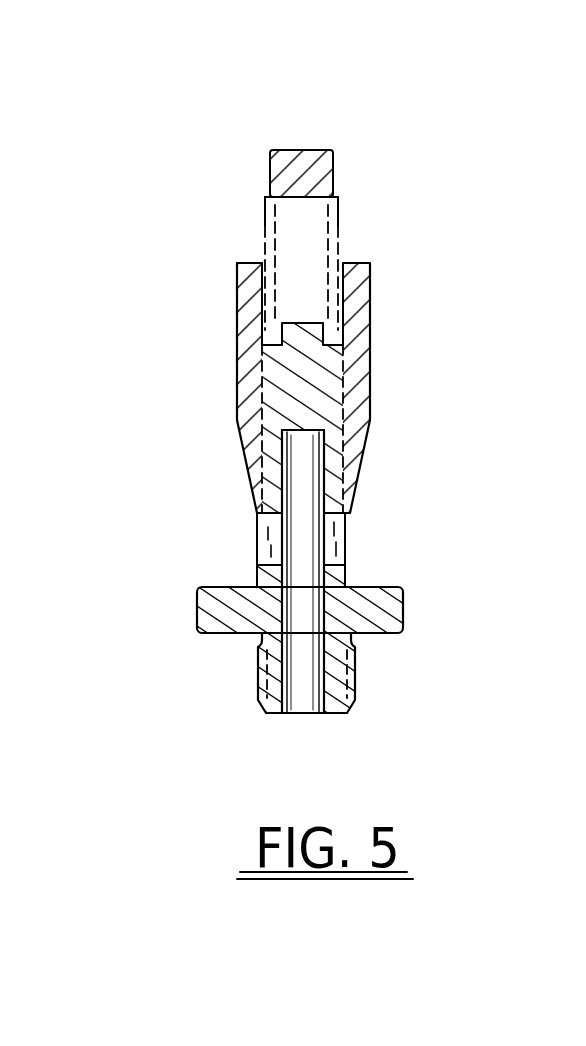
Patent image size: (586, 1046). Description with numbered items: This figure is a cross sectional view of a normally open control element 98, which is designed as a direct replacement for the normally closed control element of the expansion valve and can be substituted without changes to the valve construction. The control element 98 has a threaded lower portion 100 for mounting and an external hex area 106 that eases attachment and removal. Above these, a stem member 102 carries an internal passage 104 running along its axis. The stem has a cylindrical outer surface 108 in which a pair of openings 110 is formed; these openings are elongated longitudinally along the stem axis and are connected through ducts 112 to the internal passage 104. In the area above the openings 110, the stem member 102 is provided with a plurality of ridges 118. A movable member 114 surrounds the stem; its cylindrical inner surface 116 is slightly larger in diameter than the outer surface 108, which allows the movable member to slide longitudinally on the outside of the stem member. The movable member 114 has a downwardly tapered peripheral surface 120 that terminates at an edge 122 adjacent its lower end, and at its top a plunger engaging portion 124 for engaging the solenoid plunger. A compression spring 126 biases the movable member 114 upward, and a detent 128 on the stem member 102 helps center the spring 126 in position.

The control element 98 is at (428, 394).
The threaded lower portion 100 is at (353, 672).
The stem member 102 is at (345, 575).
The internal passage 104 is at (285, 714).
The external hex area 106 is at (403, 630).
The cylindrical outer surface 108 is at (257, 572).
The openings 110 is at (345, 548).
The ducts 112 is at (345, 530).
The movable member 114 is at (370, 355).
The cylindrical inner surface 116 is at (331, 300).
The ridges 118 is at (261, 400).
The downwardly tapered peripheral surface 120 is at (355, 470).
The edge 122 is at (257, 517).
The plunger engaging portion 124 is at (293, 150).
The compression spring 126 is at (338, 224).
The detent 128 is at (307, 325).